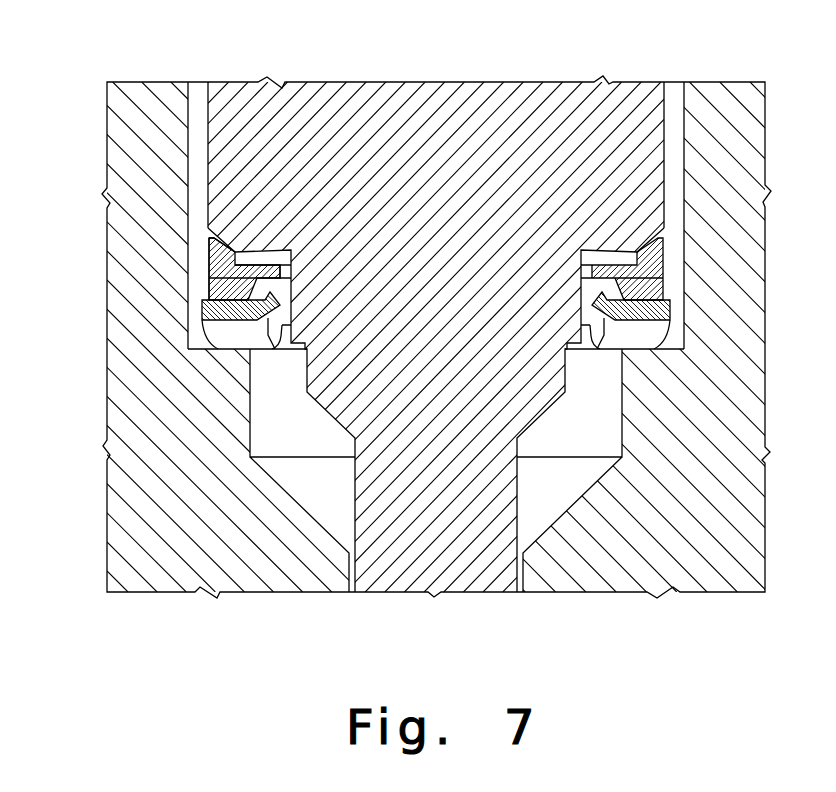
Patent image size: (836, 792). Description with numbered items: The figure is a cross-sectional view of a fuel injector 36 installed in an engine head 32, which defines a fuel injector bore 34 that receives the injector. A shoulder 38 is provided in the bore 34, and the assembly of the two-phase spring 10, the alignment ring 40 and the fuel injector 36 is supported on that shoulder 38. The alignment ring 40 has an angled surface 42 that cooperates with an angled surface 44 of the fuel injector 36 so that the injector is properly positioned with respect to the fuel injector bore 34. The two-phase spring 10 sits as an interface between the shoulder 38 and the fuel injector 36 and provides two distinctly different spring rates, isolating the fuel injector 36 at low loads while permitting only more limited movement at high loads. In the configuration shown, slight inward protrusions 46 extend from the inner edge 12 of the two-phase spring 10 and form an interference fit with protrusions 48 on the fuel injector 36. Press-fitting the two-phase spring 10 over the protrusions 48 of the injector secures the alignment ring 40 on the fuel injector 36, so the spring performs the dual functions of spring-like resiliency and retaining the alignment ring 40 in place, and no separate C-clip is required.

The two-phase spring 10 is at (668, 310).
The inner edge 12 is at (272, 340).
The engine head 32 is at (123, 117).
The fuel injector bore 34 is at (200, 88).
The fuel injector 36 is at (426, 92).
The shoulder 38 is at (203, 322).
The alignment ring 40 is at (209, 273).
The angled surface 42 is at (235, 250).
The angled surface 44 is at (209, 240).
The inward protrusions 46 is at (602, 298).
The protrusions 48 is at (584, 340).